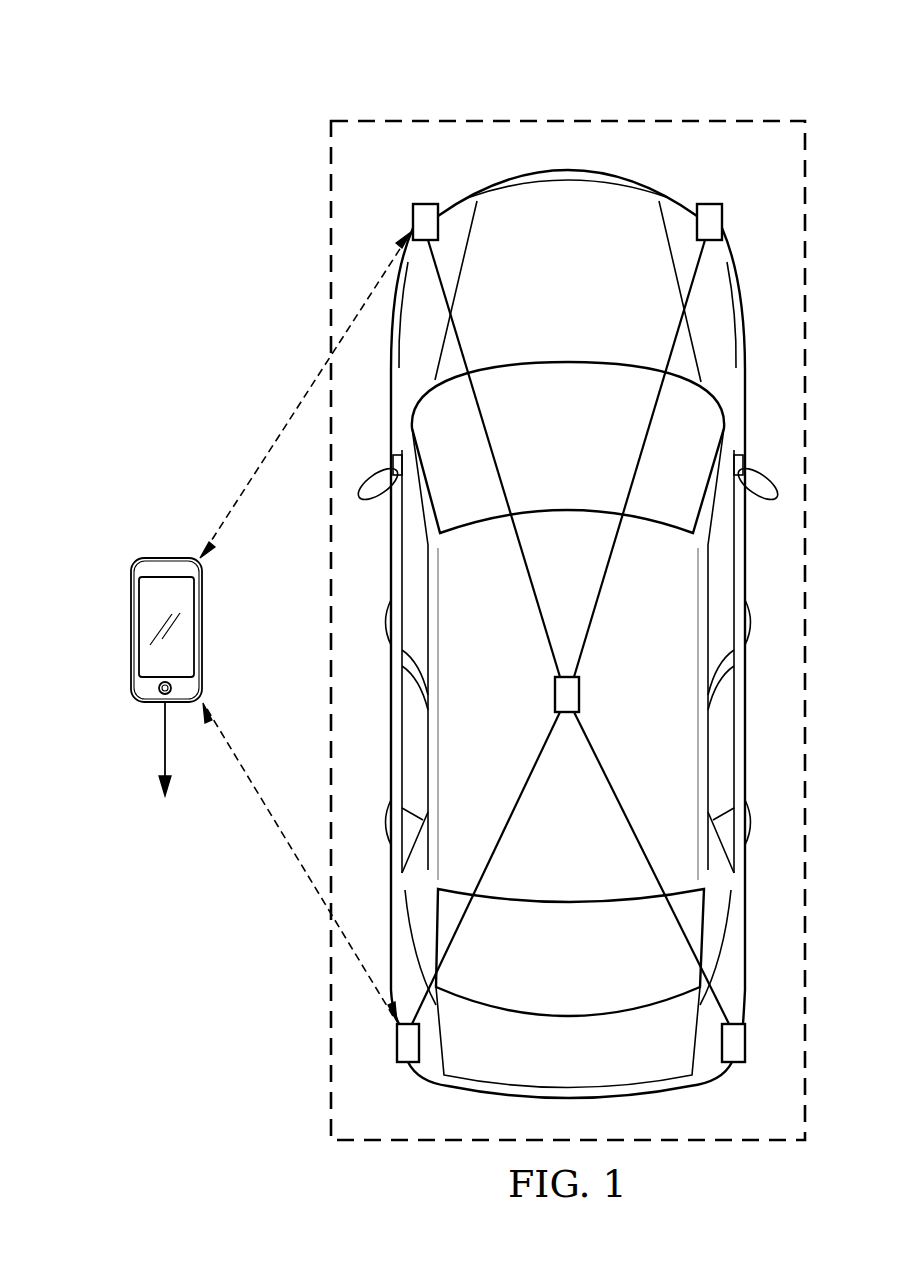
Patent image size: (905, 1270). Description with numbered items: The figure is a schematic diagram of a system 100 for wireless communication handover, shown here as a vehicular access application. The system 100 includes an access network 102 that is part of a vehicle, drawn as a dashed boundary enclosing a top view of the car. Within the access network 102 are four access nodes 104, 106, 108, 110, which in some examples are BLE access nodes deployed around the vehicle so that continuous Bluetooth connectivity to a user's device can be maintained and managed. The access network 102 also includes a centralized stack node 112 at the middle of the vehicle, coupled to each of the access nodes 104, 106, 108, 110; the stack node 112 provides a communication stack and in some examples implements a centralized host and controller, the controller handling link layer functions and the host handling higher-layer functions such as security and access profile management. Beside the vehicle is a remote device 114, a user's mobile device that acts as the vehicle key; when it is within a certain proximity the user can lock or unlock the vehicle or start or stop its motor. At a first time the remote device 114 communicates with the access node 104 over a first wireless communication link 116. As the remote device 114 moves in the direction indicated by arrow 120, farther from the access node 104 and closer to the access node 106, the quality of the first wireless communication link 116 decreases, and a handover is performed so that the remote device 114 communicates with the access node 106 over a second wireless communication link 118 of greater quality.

The system 100 is at (318, 66).
The access network 102 is at (657, 114).
The access node 104 is at (425, 204).
The access node 106 is at (407, 1064).
The access node 108 is at (708, 204).
The access node 110 is at (733, 1064).
The centralized stack node 112 is at (579, 696).
The remote device 114 is at (131, 630).
The first wireless communication link 116 is at (276, 433).
The second wireless communication link 118 is at (272, 822).
The arrow 120 is at (165, 736).